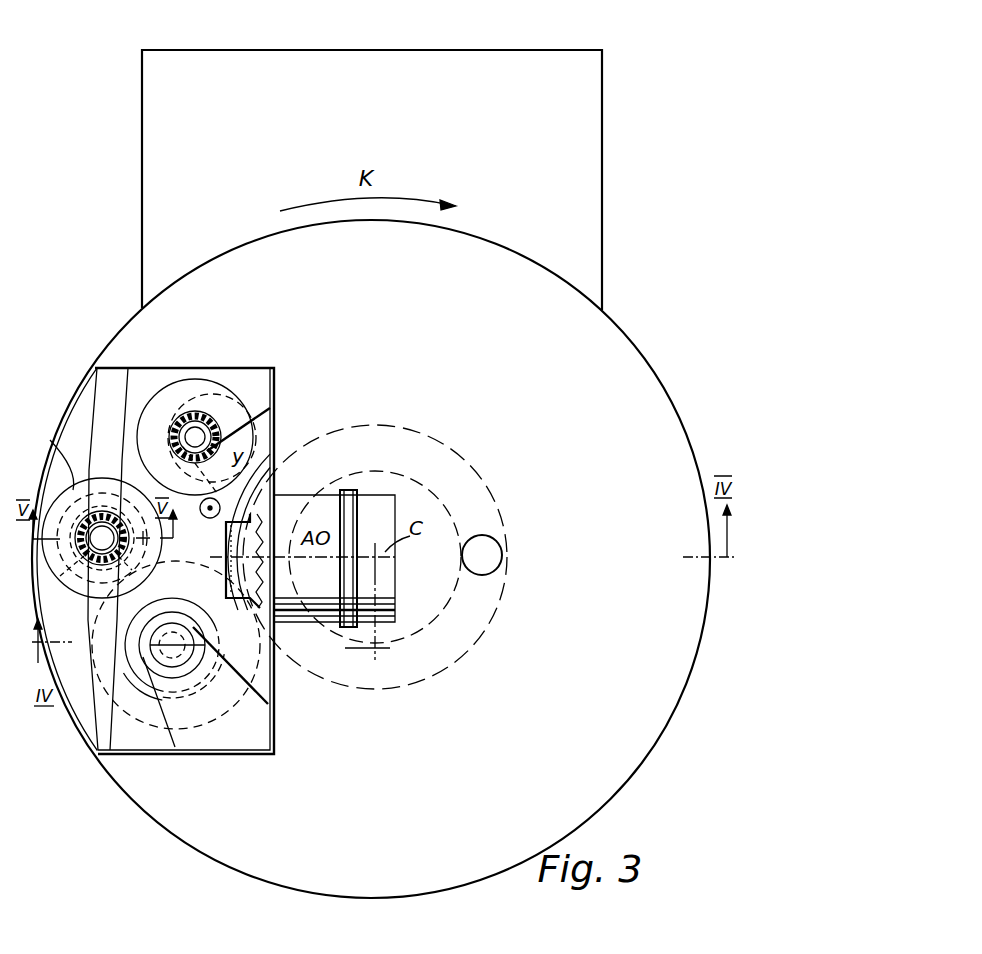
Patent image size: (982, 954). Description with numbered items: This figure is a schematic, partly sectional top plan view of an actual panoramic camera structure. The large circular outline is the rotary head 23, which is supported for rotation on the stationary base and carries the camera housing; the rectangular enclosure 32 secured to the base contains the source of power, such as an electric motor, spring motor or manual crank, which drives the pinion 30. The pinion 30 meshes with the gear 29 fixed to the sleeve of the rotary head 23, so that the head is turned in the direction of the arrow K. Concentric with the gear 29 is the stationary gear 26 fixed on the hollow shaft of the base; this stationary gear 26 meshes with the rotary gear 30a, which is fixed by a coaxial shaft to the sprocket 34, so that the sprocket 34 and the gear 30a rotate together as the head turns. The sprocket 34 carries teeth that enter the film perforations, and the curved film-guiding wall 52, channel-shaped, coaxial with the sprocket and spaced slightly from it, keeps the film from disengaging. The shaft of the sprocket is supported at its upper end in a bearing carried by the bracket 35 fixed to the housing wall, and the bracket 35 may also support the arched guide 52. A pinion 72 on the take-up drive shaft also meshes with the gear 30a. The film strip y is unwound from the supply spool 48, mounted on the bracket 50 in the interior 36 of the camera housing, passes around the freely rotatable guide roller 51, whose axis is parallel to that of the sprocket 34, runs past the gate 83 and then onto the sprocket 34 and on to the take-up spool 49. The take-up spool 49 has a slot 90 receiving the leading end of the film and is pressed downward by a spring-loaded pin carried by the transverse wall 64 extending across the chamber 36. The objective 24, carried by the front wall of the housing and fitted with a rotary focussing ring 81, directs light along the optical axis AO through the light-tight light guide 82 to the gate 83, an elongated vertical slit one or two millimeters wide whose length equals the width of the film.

The enclosure 32 is at (470, 50).
The rotary head 23 is at (622, 308).
The interior of the camera housing 36 is at (138, 382).
The transverse wall 64 is at (96, 393).
The take-up spool 49 is at (53, 453).
The supply spool 48 is at (193, 380).
The bracket 50 is at (198, 418).
The guide roller 51 is at (188, 450).
The light guide 82 is at (273, 448).
The gate 83 is at (226, 557).
The sprocket 34 is at (226, 595).
The slot 90 is at (244, 583).
The pinion 72 is at (75, 584).
The curved film-guiding wall 52 is at (130, 736).
The rotary gear 30a is at (196, 726).
The bracket 35 is at (258, 703).
The objective 24 is at (404, 486).
The focussing ring 81 is at (348, 490).
The stationary gear 26 is at (440, 441).
The gear 29 is at (440, 617).
The pinion 30 is at (499, 538).